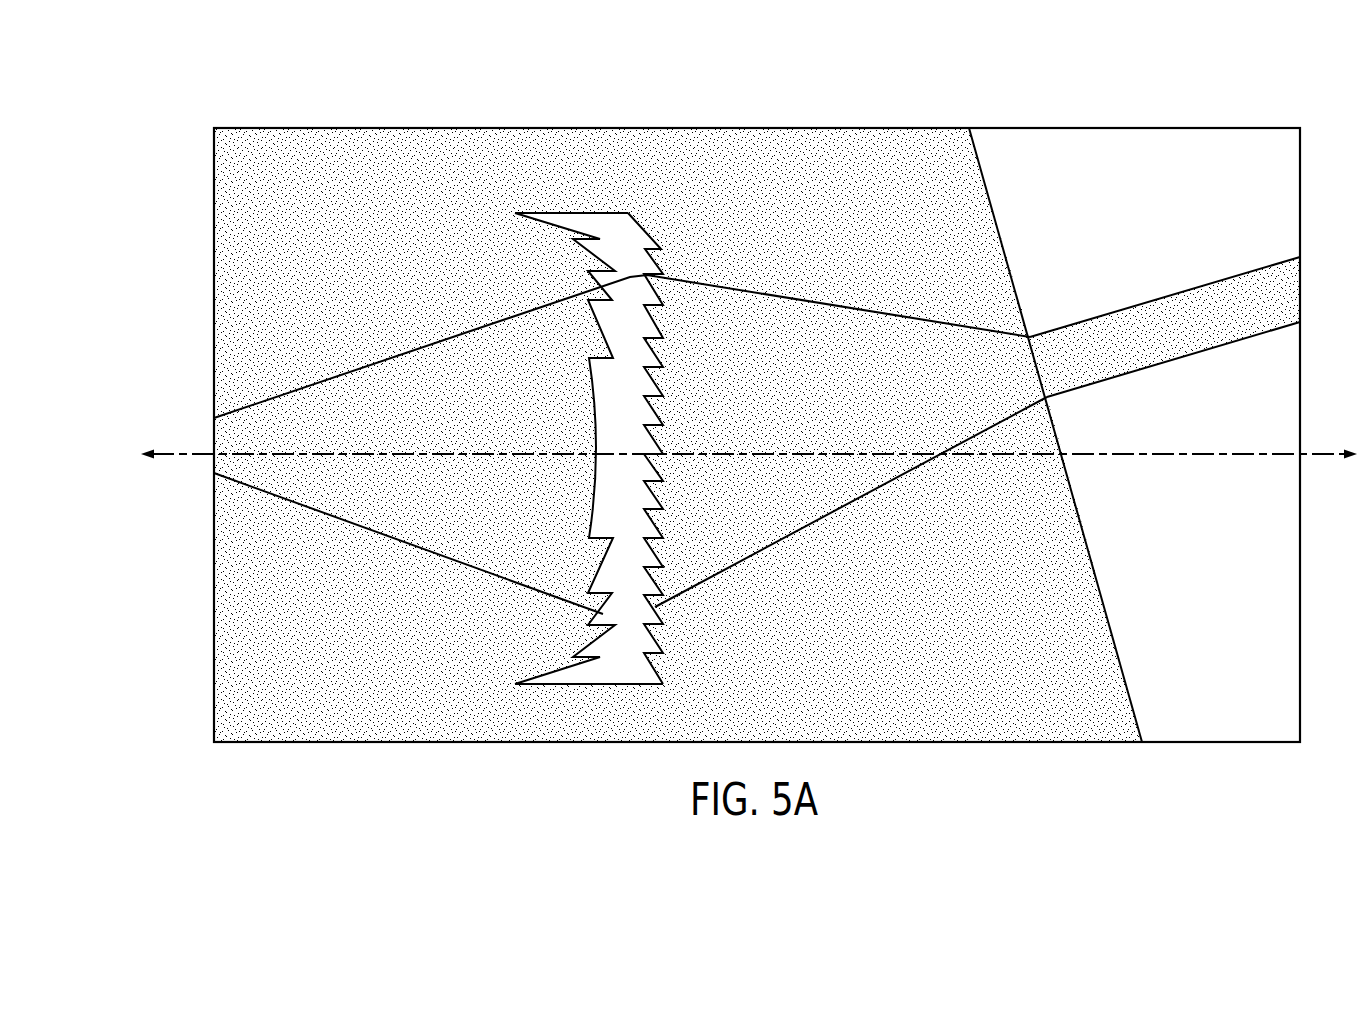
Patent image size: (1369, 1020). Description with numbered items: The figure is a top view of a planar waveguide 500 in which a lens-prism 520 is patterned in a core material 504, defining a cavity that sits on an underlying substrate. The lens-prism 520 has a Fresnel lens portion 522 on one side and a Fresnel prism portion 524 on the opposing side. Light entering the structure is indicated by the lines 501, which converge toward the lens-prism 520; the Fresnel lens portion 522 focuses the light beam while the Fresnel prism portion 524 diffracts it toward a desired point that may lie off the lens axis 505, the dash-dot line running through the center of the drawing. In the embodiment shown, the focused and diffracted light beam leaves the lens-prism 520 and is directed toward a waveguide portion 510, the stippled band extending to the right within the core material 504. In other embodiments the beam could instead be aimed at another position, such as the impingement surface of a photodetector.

The planar waveguide 500 is at (749, 383).
The lines indicating the light beam 501 is at (301, 387).
The core material 504 is at (727, 142).
The lens axis 505 is at (1168, 452).
The waveguide portion 510 is at (1100, 330).
The lens-prism 520 is at (627, 387).
The Fresnel lens portion 522 is at (572, 275).
The Fresnel prism portion 524 is at (678, 274).